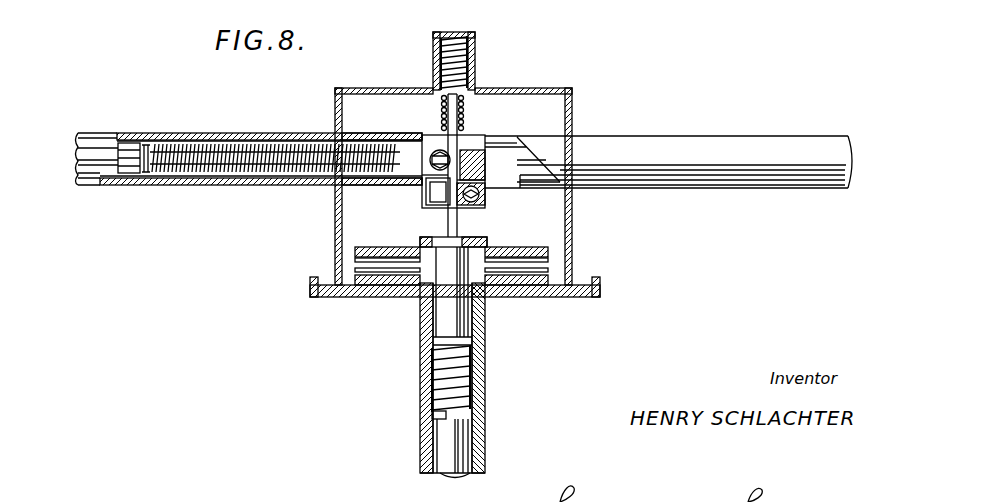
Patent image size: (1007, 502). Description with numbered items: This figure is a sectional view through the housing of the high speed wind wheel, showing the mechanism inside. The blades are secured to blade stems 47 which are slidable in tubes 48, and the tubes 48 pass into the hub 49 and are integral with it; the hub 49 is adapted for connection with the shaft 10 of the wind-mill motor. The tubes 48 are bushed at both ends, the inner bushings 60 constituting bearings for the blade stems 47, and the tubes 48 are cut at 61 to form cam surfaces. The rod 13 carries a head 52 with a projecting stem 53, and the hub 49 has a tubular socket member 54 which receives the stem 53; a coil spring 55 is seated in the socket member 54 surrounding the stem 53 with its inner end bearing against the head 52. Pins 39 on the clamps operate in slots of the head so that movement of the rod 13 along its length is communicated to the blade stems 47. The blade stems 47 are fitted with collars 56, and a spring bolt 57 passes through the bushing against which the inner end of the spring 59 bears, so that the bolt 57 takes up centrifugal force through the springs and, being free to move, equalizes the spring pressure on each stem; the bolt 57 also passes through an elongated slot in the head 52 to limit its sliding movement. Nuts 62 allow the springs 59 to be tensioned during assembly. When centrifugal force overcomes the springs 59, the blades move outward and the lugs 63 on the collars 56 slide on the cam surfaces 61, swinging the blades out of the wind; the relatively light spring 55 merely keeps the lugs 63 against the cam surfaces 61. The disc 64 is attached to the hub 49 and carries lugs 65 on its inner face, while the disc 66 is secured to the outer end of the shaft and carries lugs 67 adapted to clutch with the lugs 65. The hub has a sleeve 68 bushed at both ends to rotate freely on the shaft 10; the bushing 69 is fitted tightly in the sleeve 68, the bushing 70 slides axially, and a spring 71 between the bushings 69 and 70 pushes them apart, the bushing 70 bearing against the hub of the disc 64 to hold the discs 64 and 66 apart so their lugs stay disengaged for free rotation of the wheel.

The shaft 10 is at (465, 437).
The rod 13 is at (460, 237).
The inwardly projecting pins 39 is at (466, 162).
The blade stems 47 is at (140, 148).
The tubes 48 is at (192, 135).
The hub 49 is at (340, 90).
The head 52 is at (443, 138).
The stem 53 is at (457, 112).
The tubular socket member 54 is at (445, 31).
The coil spring 55 is at (464, 58).
The collars 56 is at (426, 192).
The spring bolt 57 is at (252, 150).
The spring 59 is at (274, 176).
The inner bushings 60 is at (322, 134).
The cam surfaces 61 is at (548, 160).
The nuts 62 is at (147, 173).
The lugs 63 is at (518, 140).
The disc 64 is at (535, 296).
The lugs 65 is at (372, 284).
The disc 66 is at (528, 250).
The lugs 67 is at (372, 259).
The sleeve 68 is at (425, 372).
The bushing 69 is at (432, 436).
The bushing 70 is at (426, 313).
The spring 71 is at (470, 378).